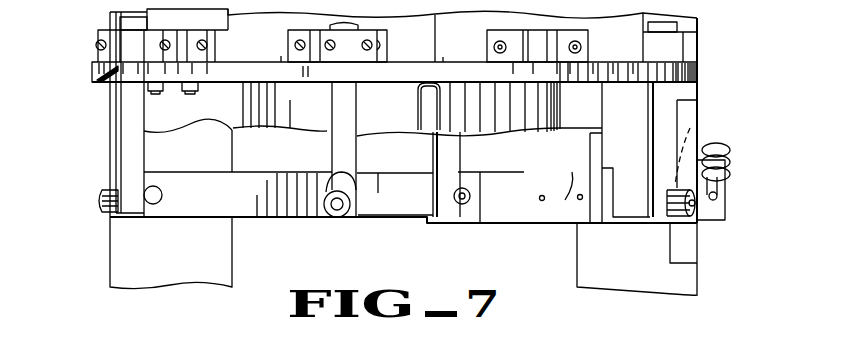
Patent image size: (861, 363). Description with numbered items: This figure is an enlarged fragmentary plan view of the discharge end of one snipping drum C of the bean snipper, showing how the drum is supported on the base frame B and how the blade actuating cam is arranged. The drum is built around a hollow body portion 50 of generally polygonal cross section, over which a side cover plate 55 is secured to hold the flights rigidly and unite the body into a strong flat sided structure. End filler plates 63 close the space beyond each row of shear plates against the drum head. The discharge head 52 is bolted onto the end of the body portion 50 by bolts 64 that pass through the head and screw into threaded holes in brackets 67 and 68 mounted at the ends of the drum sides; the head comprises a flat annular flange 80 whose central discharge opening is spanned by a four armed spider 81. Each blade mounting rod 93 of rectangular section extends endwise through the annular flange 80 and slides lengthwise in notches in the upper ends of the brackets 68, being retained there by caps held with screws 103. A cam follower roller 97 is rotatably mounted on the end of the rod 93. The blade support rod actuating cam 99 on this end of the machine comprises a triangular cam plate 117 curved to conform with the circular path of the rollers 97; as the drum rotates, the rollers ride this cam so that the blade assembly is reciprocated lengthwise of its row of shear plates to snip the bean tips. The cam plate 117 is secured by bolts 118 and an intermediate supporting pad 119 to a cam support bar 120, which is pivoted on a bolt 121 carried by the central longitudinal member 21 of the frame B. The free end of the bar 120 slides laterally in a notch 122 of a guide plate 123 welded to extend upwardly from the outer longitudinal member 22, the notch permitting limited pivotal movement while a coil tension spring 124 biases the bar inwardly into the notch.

The discharge head 52 is at (100, 77).
The brackets 68 is at (98, 56).
The brackets 67 is at (208, 44).
The screws 103 is at (366, 50).
The end filler plates 63 is at (281, 57).
The hollow body portion 50 is at (472, 41).
The snipping drum C is at (418, 55).
The side cover plate 55 is at (443, 57).
The annular flange 80 is at (683, 76).
The bolts 64 is at (193, 89).
The blade mounting rod 93 is at (128, 153).
The four armed spider 81 is at (313, 122).
The bolt 121 is at (160, 193).
The cam follower rollers 97 is at (101, 212).
The guide plate 123 is at (688, 124).
The notch 122 is at (690, 128).
The coil tension spring 124 is at (735, 160).
The cam support bar 120 is at (620, 208).
The blade support rod actuating cam 99 is at (498, 212).
The triangular cam plate 117 is at (570, 207).
The intermediate supporting pad 119 is at (603, 227).
The bolts 118 is at (578, 195).
The longitudinal member 21 is at (215, 266).
The longitudinal member 22 is at (678, 286).
The base frame B is at (160, 283).